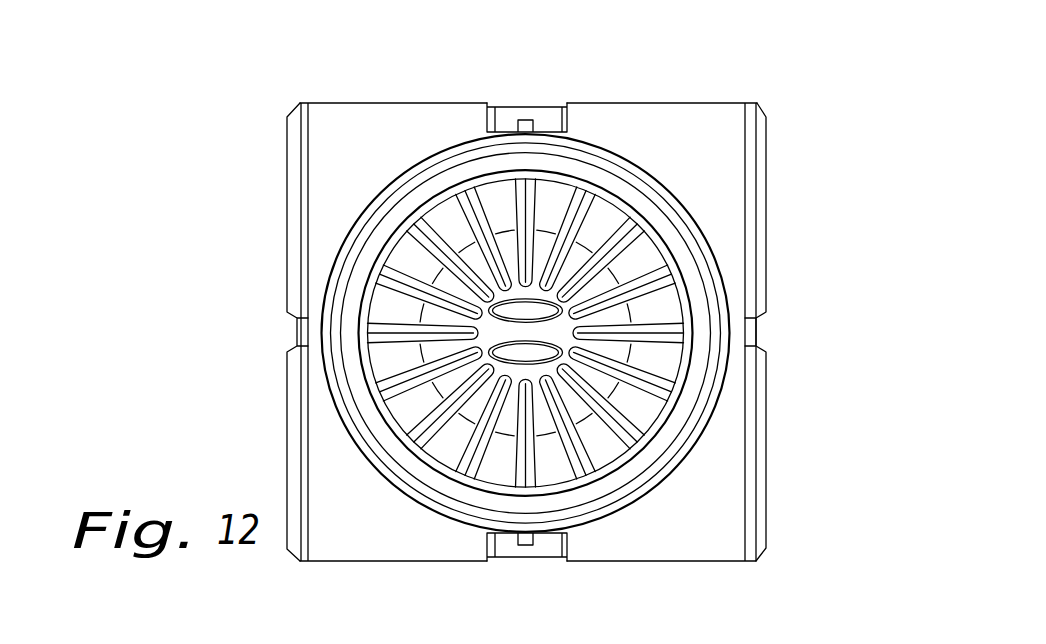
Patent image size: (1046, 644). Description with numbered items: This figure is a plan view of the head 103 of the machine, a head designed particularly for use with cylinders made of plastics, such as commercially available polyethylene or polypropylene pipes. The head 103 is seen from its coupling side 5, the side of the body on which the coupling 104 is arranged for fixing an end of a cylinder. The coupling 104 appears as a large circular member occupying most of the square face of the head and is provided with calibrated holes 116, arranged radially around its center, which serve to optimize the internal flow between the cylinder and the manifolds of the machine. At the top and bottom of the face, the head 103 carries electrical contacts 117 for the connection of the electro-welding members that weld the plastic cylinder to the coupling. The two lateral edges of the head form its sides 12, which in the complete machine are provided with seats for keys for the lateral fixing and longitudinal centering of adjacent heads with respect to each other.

The coupling side 5 is at (690, 520).
The sides 12 is at (290, 418).
The head 103 is at (534, 328).
The coupling 104 is at (710, 258).
The calibrated holes 116 is at (537, 307).
The electrical contacts 117 is at (527, 120).